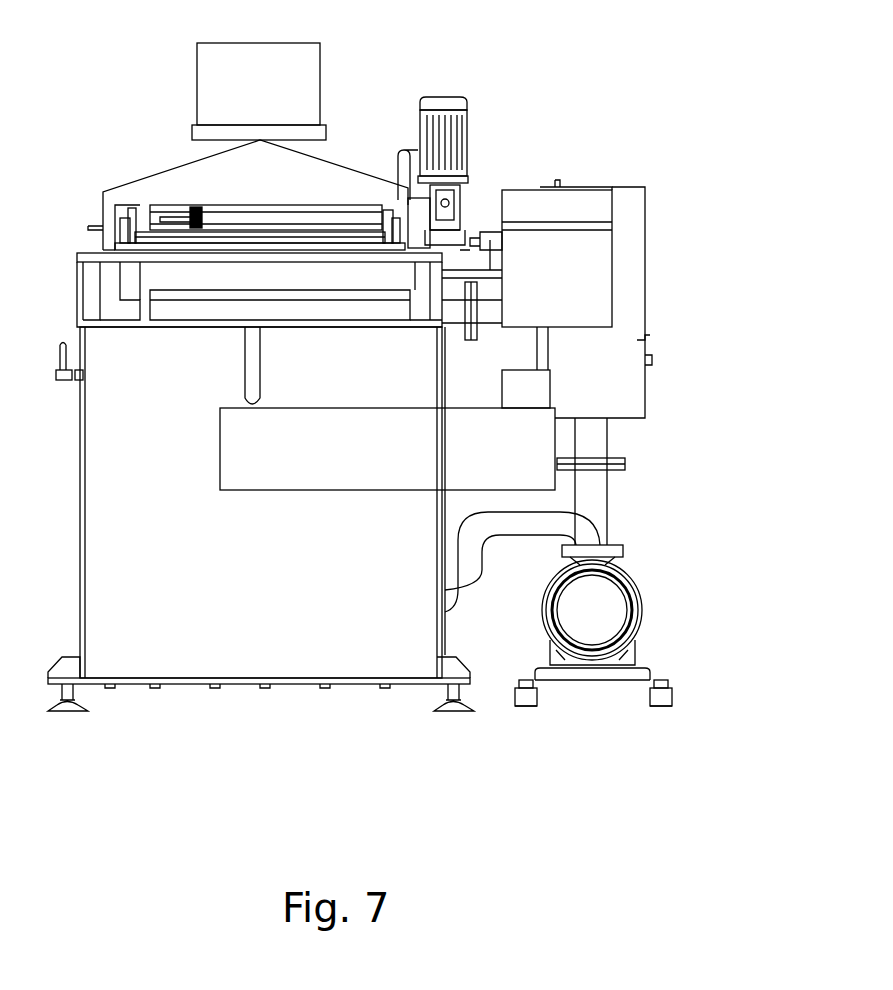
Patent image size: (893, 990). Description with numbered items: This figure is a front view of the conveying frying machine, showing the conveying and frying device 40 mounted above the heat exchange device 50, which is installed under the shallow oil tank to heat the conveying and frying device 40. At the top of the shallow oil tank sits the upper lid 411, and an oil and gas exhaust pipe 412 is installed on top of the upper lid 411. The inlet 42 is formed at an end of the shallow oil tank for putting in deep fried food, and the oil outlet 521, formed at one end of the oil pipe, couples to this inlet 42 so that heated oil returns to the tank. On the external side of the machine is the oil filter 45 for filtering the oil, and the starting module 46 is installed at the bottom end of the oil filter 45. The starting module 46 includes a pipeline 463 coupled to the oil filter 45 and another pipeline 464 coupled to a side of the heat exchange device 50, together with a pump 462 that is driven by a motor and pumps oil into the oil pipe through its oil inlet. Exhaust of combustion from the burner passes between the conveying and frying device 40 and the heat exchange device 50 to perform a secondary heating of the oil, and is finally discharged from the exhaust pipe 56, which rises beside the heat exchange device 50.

The conveying and frying device 40 is at (153, 112).
The upper lid 411 is at (320, 172).
The oil and gas exhaust pipe 412 is at (290, 60).
The inlet 42 is at (155, 205).
The oil filter 45 is at (632, 387).
The starting module 46 is at (664, 653).
The pump 462 is at (643, 610).
The pipeline 463 is at (590, 492).
The pipeline 464 is at (531, 523).
The heat exchange device 50 is at (272, 650).
The oil outlet 521 is at (248, 373).
The exhaust pipe 56 is at (540, 397).